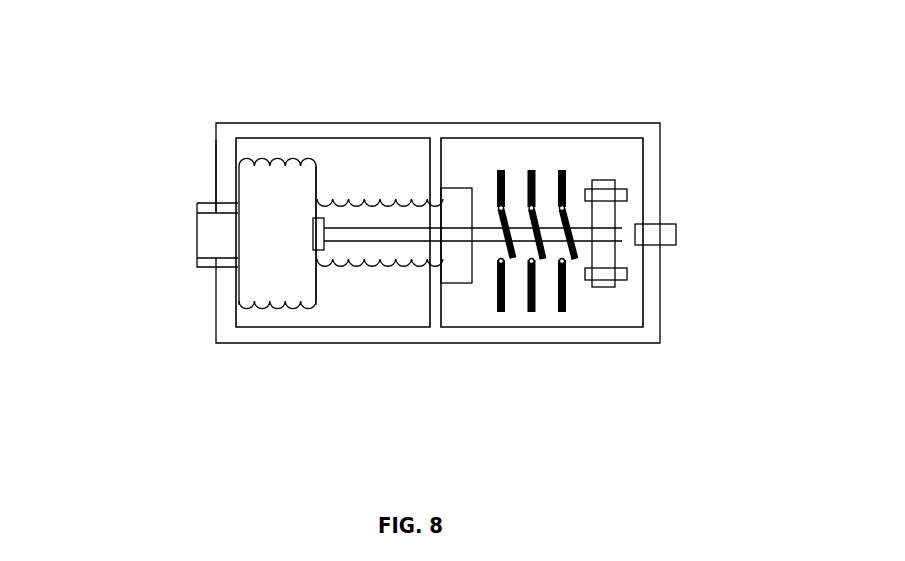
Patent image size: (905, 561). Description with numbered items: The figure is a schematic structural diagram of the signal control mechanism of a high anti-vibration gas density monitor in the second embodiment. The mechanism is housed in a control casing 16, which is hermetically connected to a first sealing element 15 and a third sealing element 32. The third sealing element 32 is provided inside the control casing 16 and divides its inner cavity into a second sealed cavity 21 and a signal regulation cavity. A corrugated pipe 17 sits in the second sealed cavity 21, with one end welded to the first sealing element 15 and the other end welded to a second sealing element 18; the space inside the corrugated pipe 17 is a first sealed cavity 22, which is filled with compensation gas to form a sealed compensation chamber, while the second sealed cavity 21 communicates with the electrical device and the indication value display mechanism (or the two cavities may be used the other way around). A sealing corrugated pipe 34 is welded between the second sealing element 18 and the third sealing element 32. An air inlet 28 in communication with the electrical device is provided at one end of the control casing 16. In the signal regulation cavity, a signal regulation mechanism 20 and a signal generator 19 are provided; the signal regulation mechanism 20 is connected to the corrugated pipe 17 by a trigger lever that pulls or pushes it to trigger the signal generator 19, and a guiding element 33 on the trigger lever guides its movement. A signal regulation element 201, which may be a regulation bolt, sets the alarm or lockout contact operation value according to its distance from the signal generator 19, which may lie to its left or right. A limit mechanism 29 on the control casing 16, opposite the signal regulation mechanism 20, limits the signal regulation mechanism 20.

The first sealing element 15 is at (223, 170).
The control casing 16 is at (272, 133).
The corrugated pipe 17 is at (262, 162).
The second sealing element 18 is at (316, 190).
The signal generator 19 is at (536, 170).
The signal regulation mechanism 20 is at (556, 236).
The signal regulation element 201 is at (623, 270).
The second sealed cavity 21 is at (370, 168).
The first sealed cavity 22 is at (275, 275).
The air inlet 28 is at (207, 267).
The limit mechanism 29 is at (676, 226).
The third sealing element 32 is at (437, 165).
The guiding element 33 is at (457, 270).
The sealing corrugated pipe 34 is at (385, 268).